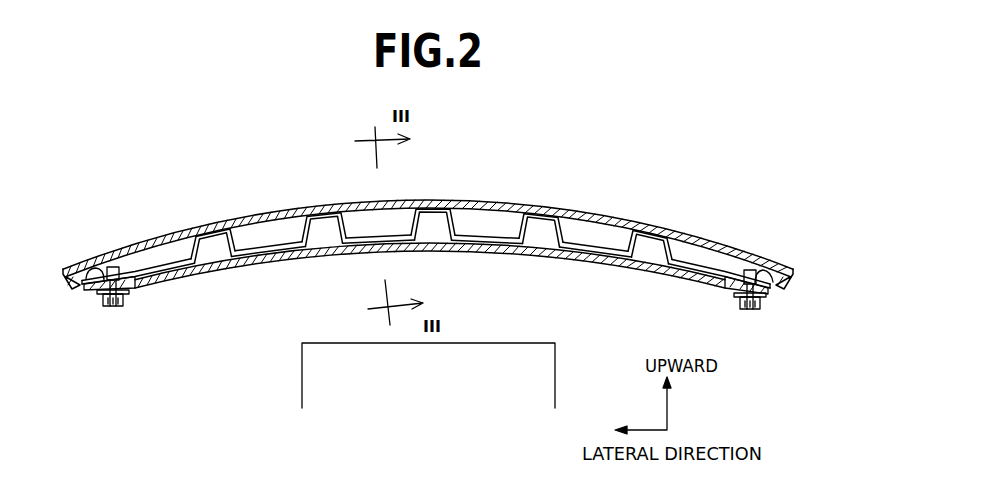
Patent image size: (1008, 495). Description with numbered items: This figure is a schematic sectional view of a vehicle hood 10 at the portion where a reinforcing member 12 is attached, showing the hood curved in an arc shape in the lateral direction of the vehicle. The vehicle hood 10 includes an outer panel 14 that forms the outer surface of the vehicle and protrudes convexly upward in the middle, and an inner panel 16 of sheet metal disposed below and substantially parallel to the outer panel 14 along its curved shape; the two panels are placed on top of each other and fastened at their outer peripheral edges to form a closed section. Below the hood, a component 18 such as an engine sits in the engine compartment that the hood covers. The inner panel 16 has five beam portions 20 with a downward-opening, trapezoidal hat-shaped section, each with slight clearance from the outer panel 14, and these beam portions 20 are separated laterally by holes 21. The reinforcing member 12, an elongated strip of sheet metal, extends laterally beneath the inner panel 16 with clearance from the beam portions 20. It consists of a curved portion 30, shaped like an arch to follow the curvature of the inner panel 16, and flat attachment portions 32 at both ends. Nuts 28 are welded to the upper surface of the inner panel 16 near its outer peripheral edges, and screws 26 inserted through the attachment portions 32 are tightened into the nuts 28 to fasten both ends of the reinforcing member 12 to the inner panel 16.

The vehicle hood 10 is at (627, 163).
The reinforcing member 12 is at (252, 292).
The outer panel 14 is at (474, 200).
The inner panel 16 is at (426, 242).
The component 18 is at (357, 355).
The beam portions 20 is at (210, 236).
The holes 21 is at (177, 272).
The screws 26 is at (113, 306).
The nuts 28 is at (118, 277).
The curved portion 30 is at (524, 257).
The attachment portions 32 is at (136, 293).